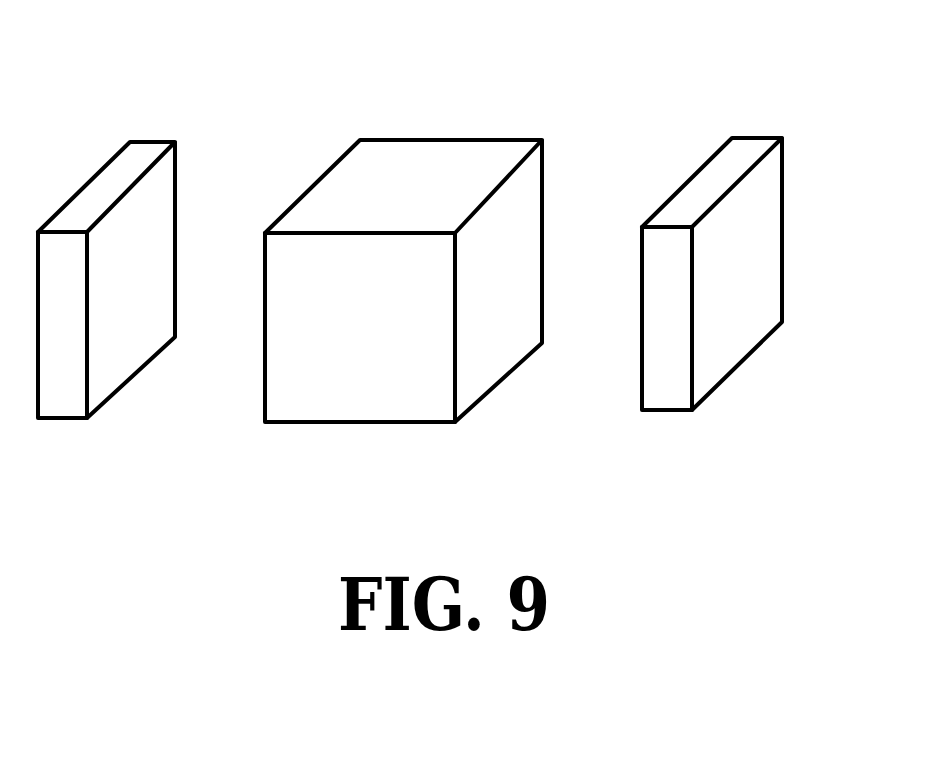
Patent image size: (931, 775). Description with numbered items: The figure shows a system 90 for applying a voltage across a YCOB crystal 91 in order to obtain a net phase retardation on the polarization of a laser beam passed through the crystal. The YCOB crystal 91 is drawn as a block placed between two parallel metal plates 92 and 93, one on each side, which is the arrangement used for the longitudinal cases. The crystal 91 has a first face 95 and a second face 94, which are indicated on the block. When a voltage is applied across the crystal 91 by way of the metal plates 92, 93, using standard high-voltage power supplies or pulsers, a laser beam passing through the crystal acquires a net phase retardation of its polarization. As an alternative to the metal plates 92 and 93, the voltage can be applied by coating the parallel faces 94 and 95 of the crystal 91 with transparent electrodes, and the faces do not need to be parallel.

The system for applying a voltage across the YCOB crystal 90 is at (652, 71).
The YCOB crystal 91 is at (468, 157).
The metal plate 92 is at (145, 152).
The metal plate 93 is at (752, 150).
The second face 94 is at (502, 347).
The first face 95 is at (237, 377).